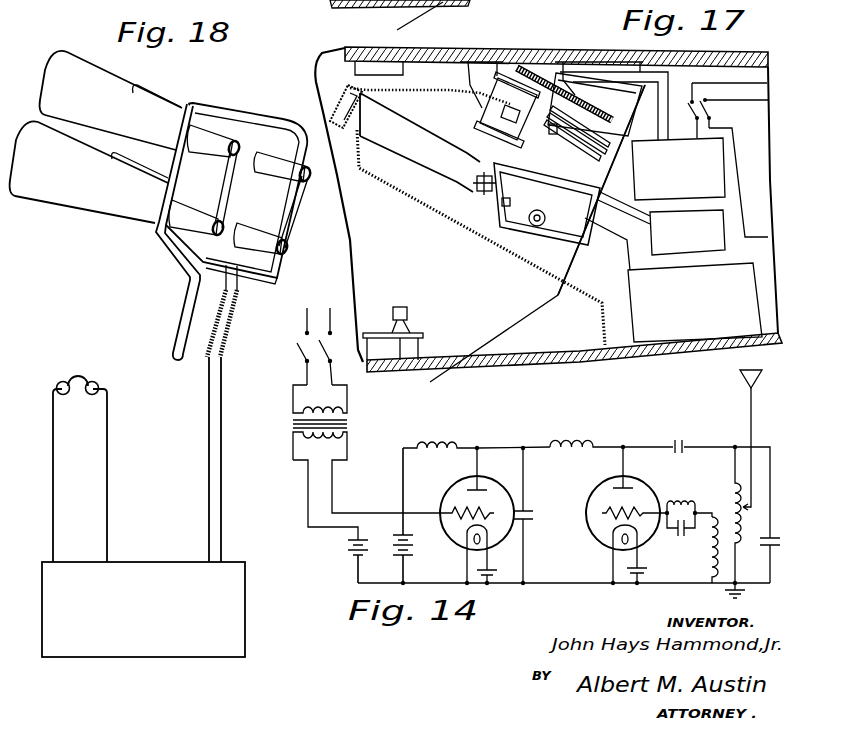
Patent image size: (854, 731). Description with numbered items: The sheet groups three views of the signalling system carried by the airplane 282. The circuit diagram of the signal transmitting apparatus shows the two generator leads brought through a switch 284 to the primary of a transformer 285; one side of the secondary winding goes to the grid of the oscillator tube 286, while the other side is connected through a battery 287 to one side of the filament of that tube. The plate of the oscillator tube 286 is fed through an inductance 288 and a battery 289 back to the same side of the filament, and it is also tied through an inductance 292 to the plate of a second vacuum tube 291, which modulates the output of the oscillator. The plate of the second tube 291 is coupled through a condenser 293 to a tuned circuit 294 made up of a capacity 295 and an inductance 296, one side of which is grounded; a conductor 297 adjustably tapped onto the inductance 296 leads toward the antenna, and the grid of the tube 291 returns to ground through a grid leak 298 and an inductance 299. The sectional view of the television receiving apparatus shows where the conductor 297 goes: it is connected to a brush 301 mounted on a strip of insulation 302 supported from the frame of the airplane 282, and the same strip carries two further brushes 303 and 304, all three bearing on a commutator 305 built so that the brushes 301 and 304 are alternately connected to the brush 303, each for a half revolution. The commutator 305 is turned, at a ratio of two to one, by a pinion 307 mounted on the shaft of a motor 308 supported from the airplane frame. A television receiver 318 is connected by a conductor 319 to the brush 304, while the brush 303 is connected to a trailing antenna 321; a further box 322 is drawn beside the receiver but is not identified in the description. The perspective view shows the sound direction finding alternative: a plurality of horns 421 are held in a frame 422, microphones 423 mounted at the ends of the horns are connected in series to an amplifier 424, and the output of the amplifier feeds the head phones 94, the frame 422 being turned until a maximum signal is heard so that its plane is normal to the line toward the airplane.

In FIG. 18, the head phones 94 is at (78, 391).
In FIG. 17, the airplane 282 is at (349, 84).
In FIG. 14, the switch 284 is at (305, 358).
In FIG. 14, the transformer 285 is at (348, 421).
In FIG. 14, the oscillator tube 286 is at (441, 497).
In FIG. 14, the battery 287 is at (348, 547).
In FIG. 14, the inductance 288 is at (440, 443).
In FIG. 14, the battery 289 is at (426, 550).
In FIG. 14, the second vacuum tube 291 is at (595, 492).
In FIG. 14, the inductance 292 is at (578, 440).
In FIG. 14, the condenser 293 is at (674, 443).
In FIG. 14, the tuned circuit 294 is at (763, 460).
In FIG. 14, the capacity 295 is at (764, 552).
In FIG. 14, the inductance 296 is at (730, 492).
In FIG. 17, the conductor 297 is at (740, 153).
In FIG. 14, the conductor 297 is at (750, 420).
In FIG. 14, the grid leak 298 is at (683, 503).
In FIG. 14, the inductance 299 is at (711, 563).
In FIG. 17, the brush 301 is at (617, 121).
In FIG. 17, the strip of insulation 302 is at (643, 87).
In FIG. 17, the brush 303 is at (573, 137).
In FIG. 17, the brush 304 is at (586, 151).
In FIG. 17, the commutator 305 is at (533, 138).
In FIG. 17, the pinion 307 is at (530, 80).
In FIG. 17, the motor 308 is at (505, 105).
In FIG. 17, the television receiver 318 is at (695, 302).
In FIG. 17, the conductor 319 is at (629, 259).
In FIG. 17, the trailing antenna 321 is at (426, 10).
In FIG. 17, the control unit 322 is at (678, 169).
In FIG. 18, the horns 421 is at (115, 175).
In FIG. 18, the frame 422 is at (233, 120).
In FIG. 18, the microphones 423 is at (240, 143).
In FIG. 18, the amplifier 424 is at (153, 567).